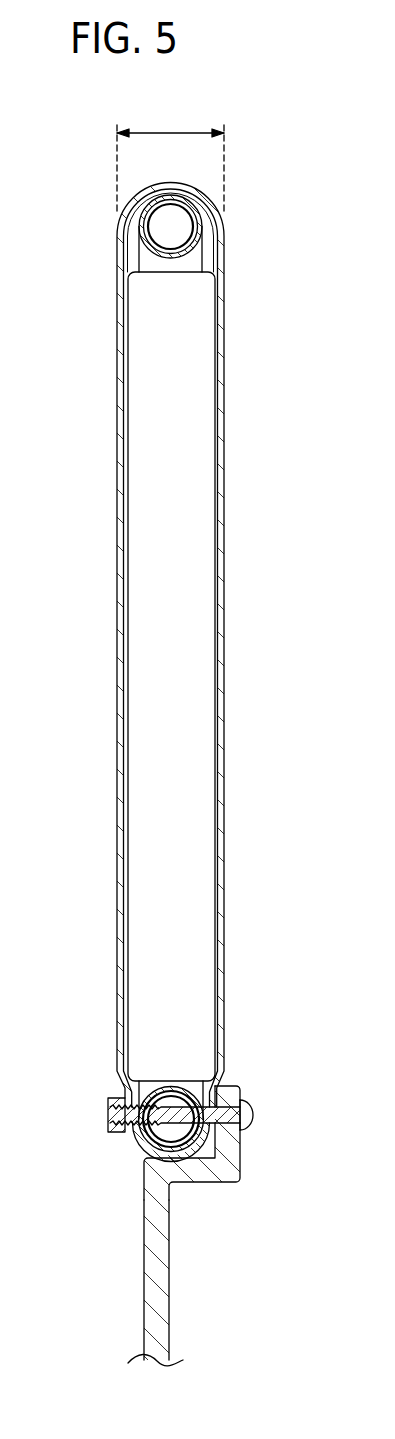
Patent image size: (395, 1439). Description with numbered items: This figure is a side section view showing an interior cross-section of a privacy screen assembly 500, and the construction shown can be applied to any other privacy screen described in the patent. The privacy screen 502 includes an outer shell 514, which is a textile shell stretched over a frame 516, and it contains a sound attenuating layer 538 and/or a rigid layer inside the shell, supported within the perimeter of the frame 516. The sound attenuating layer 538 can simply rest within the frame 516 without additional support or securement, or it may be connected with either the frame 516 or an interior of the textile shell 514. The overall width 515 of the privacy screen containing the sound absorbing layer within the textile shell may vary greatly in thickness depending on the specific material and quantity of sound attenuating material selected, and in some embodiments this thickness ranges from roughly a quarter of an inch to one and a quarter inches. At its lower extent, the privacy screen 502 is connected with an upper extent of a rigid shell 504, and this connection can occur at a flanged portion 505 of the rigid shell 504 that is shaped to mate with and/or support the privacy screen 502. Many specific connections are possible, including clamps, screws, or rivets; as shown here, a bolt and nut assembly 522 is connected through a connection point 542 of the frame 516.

The privacy screen assembly 500 is at (250, 97).
The privacy screen 502 is at (252, 553).
The rigid shell 504 is at (187, 1283).
The flanged portion 505 is at (233, 1092).
The outer shell 514 is at (117, 288).
The panel width 515 is at (170, 133).
The frame 516 is at (141, 223).
The bolt and nut assembly 522 is at (108, 1102).
The sound attenuating layer 538 is at (157, 347).
The connection point 542 is at (188, 1117).